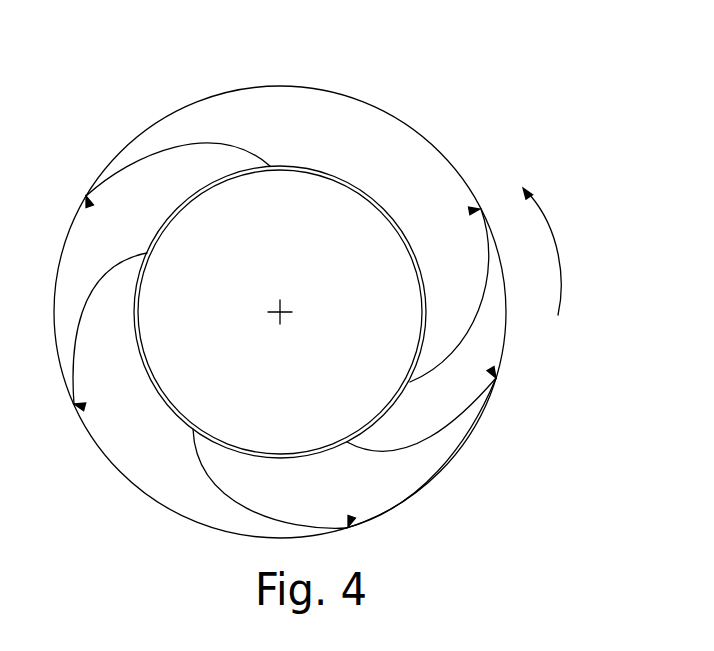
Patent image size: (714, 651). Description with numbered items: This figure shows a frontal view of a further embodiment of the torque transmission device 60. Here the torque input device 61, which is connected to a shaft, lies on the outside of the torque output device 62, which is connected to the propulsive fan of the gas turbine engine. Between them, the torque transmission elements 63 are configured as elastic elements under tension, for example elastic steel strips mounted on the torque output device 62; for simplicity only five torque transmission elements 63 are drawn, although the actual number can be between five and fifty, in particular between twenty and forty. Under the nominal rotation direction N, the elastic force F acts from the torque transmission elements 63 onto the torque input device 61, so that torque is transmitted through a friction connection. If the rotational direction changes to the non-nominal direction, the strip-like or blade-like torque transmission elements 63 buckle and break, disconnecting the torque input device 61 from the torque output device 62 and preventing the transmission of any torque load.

The torque transmission device 60 is at (306, 327).
The torque input device 61 is at (421, 133).
The torque output device 62 is at (386, 210).
The torque transmission elements 63 is at (183, 150).
The elastic force F is at (476, 209).
The nominal rotation direction N is at (558, 251).